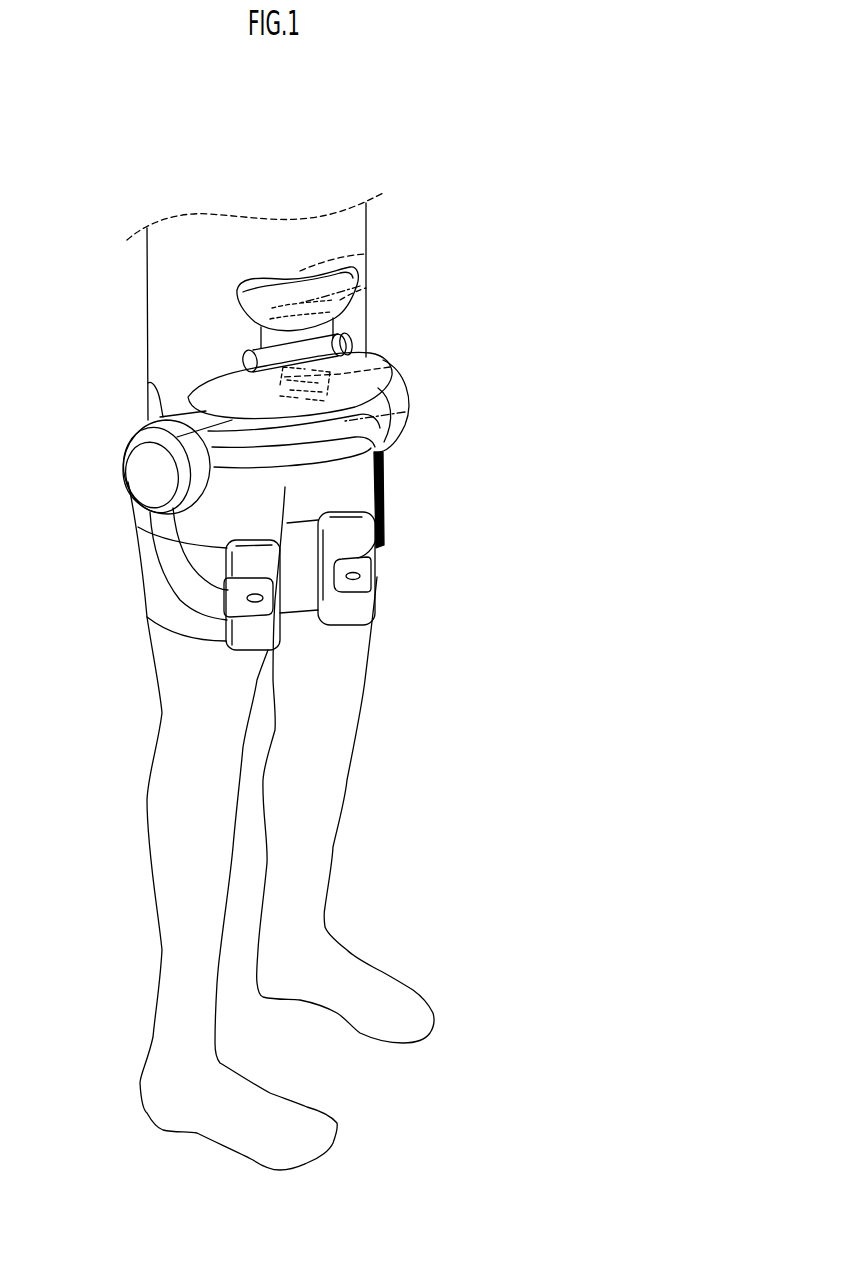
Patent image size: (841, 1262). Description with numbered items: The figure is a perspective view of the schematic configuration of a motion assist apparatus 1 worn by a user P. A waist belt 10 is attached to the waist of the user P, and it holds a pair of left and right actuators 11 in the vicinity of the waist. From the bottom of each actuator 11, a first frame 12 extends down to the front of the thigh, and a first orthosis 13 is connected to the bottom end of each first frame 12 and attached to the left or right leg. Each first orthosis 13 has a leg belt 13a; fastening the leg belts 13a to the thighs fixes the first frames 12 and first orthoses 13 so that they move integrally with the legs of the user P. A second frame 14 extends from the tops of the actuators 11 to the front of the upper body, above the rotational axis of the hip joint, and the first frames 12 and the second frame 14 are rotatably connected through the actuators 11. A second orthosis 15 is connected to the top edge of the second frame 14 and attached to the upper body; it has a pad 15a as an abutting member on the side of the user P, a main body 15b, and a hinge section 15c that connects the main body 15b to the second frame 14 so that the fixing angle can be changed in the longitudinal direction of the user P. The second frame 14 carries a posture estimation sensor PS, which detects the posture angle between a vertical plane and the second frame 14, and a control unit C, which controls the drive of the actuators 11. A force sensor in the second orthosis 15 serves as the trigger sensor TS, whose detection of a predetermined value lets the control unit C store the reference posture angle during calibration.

The motion assist apparatus 1 is at (122, 338).
The user P is at (412, 213).
The waist belt 10 is at (147, 400).
The actuators 11 is at (404, 386).
The first frames 12 is at (385, 488).
The first orthoses 13 is at (358, 543).
The leg belts 13a is at (370, 586).
The second frame 14 is at (385, 362).
The second orthosis 15 is at (268, 271).
The pad 15a is at (357, 261).
The main body 15b is at (352, 298).
The hinge section 15c is at (243, 356).
The trigger sensor TS is at (360, 286).
The posture estimation sensor PS is at (390, 367).
The control unit C is at (405, 412).